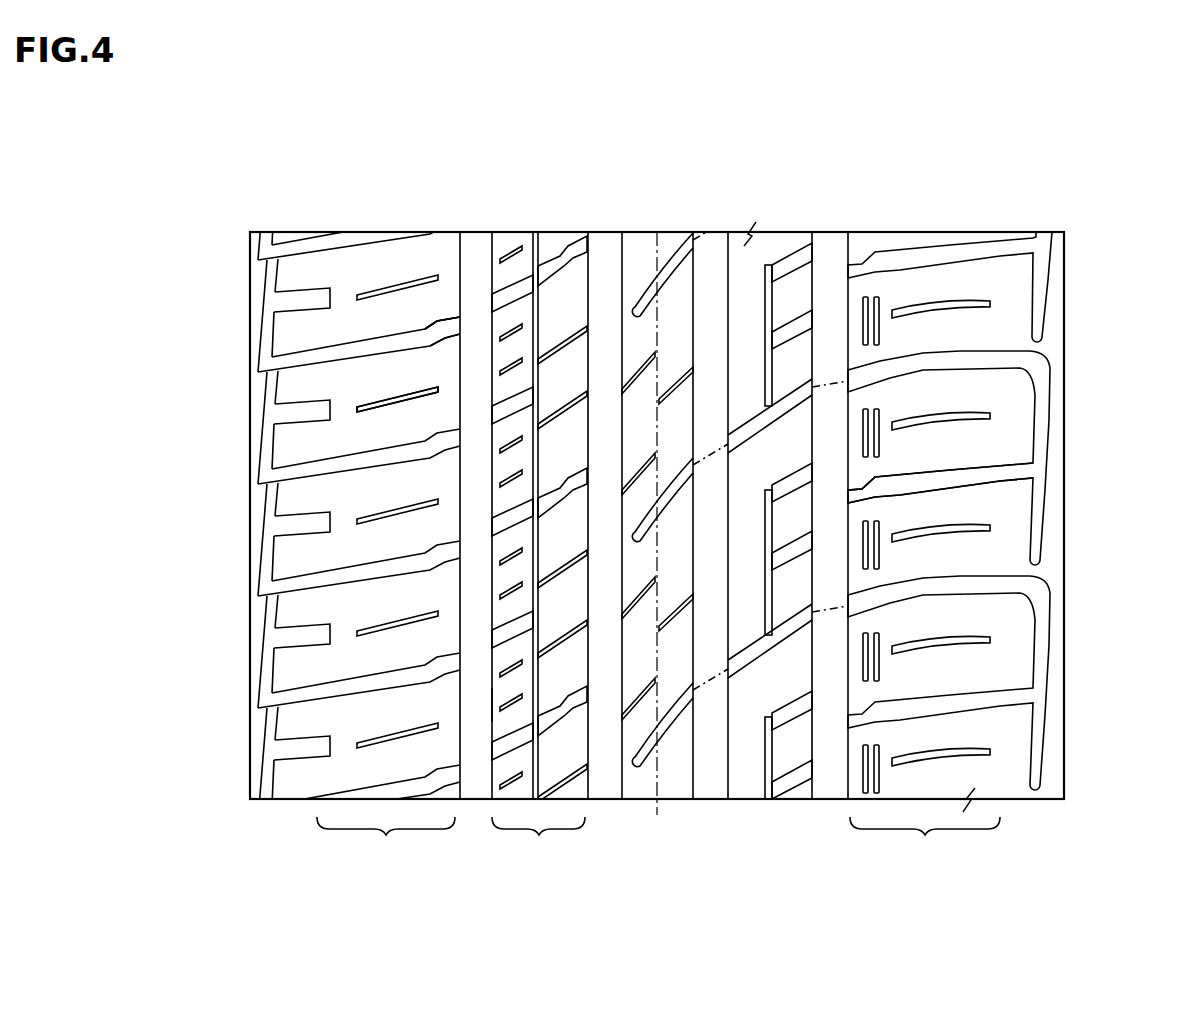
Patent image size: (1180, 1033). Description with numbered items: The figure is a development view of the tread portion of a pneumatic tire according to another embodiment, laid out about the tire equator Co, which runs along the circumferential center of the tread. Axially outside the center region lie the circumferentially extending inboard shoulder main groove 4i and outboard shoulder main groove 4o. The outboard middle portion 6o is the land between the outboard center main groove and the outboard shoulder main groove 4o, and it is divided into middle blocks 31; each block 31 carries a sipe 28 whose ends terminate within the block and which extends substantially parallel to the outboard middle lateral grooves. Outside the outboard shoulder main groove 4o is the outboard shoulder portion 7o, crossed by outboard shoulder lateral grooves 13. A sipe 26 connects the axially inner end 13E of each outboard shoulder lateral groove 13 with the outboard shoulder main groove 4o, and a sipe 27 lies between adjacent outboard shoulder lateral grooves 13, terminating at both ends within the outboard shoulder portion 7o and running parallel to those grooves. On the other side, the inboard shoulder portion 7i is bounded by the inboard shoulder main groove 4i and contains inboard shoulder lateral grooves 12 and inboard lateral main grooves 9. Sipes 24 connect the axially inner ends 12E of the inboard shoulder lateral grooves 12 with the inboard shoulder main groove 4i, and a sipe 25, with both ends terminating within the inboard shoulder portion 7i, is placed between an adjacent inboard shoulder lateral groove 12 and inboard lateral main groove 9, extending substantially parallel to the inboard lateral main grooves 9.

The outboard shoulder main groove 4o is at (476, 258).
The inboard shoulder main groove 4i is at (820, 255).
The outboard middle portion 6o is at (539, 508).
The outboard shoulder portion 7o is at (303, 505).
The inboard shoulder portion 7i is at (1005, 508).
The inboard lateral main groove 9 is at (945, 363).
The inboard shoulder lateral groove 12 is at (965, 476).
The axially inner end of inboard shoulder lateral groove 12E is at (874, 505).
The outboard shoulder lateral groove 13 is at (357, 341).
The axially inner end of outboard shoulder lateral groove 13E is at (427, 322).
The sipe 24 is at (853, 266).
The sipe 25 is at (928, 305).
The sipe 26 is at (448, 316).
The sipe 27 is at (375, 403).
The sipe 28 is at (508, 250).
The middle block 31 is at (490, 703).
The tire equator Co is at (658, 504).